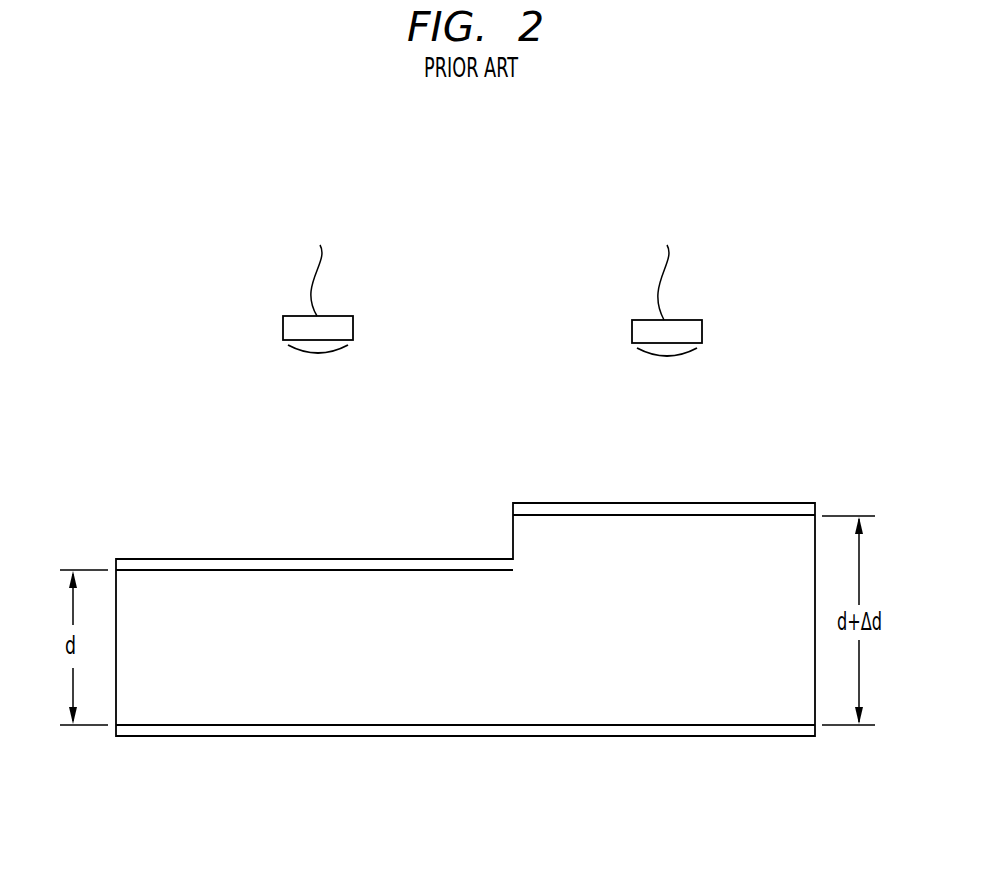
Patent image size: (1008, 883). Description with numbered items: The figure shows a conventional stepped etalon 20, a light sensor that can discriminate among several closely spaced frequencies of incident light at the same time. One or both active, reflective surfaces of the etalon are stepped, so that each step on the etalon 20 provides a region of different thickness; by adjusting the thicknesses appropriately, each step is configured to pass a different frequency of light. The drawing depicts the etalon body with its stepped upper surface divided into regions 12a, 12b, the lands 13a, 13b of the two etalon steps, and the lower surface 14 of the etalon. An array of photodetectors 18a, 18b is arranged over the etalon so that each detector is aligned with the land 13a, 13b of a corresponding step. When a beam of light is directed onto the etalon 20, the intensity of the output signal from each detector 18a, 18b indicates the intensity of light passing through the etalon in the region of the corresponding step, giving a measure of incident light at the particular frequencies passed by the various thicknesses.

The stepped etalon 20 is at (77, 212).
The substrate 14 is at (722, 728).
The first surface 12a is at (252, 566).
The second surface 12b is at (726, 510).
The land 13a is at (335, 542).
The land 13b is at (604, 482).
The photodetector 18a is at (353, 328).
The photodetector 18b is at (702, 330).